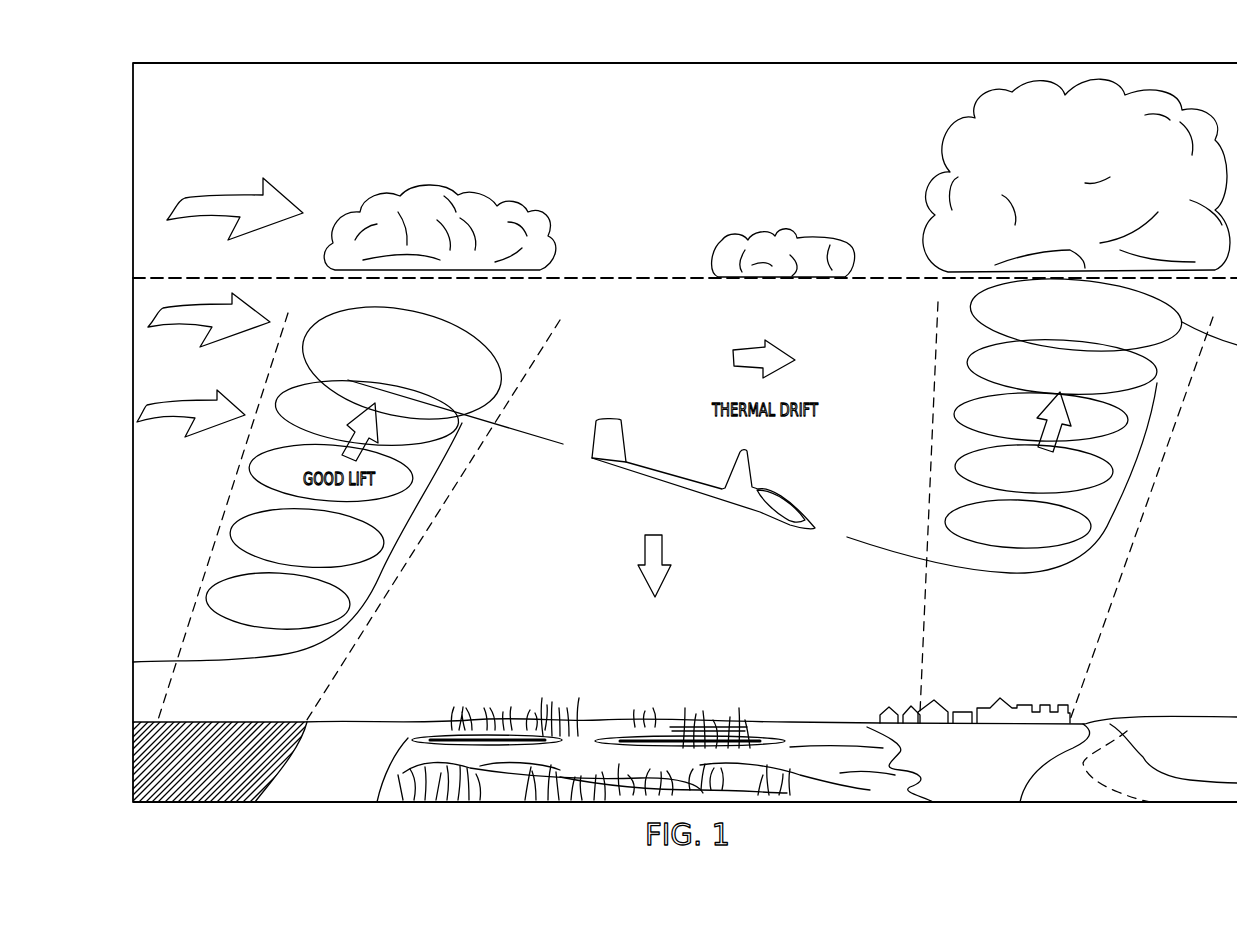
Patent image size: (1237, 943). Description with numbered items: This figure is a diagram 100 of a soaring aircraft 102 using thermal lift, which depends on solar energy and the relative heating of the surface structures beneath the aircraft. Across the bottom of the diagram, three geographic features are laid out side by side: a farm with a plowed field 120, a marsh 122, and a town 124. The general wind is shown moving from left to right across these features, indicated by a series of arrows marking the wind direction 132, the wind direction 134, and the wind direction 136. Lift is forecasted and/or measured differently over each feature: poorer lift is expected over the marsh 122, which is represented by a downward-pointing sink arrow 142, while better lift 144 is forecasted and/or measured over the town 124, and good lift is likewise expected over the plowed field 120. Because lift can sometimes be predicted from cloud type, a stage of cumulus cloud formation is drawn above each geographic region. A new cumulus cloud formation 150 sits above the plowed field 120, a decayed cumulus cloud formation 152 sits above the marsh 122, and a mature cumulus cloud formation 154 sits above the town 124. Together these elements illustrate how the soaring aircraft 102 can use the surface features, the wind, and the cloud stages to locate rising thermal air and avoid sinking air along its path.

The diagram 100 is at (1142, 38).
The soaring aircraft 102 is at (657, 468).
The plowed field 120 is at (287, 722).
The marsh 122 is at (718, 722).
The town 124 is at (1073, 660).
The wind direction 132 is at (220, 196).
The wind direction 134 is at (253, 292).
The wind direction 136 is at (177, 427).
The sink arrow 142 is at (643, 548).
The better lift 144 is at (1115, 502).
The new cumulus cloud formation 150 is at (526, 203).
The decayed cumulus cloud formation 152 is at (716, 238).
The mature cumulus cloud formation 154 is at (945, 120).